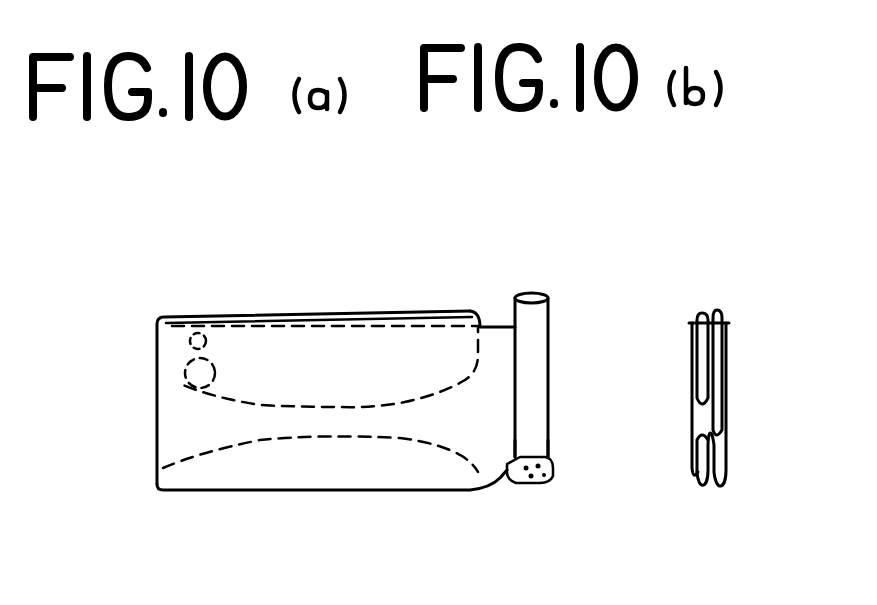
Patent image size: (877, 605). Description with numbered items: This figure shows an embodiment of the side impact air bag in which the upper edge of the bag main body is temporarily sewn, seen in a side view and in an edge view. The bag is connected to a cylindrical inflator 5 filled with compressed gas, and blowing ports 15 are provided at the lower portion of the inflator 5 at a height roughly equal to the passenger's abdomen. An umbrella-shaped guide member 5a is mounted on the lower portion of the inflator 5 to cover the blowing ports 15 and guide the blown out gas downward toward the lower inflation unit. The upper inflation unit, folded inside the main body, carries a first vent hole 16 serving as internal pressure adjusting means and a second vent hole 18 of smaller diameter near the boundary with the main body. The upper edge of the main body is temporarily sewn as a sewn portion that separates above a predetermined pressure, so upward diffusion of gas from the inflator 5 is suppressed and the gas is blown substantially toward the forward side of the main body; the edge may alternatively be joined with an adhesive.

The inflator 5 is at (538, 360).
The guide member 5a is at (553, 462).
The blowing ports 15 is at (530, 487).
The first vent hole 16 is at (168, 357).
The second vent hole 18 is at (199, 332).